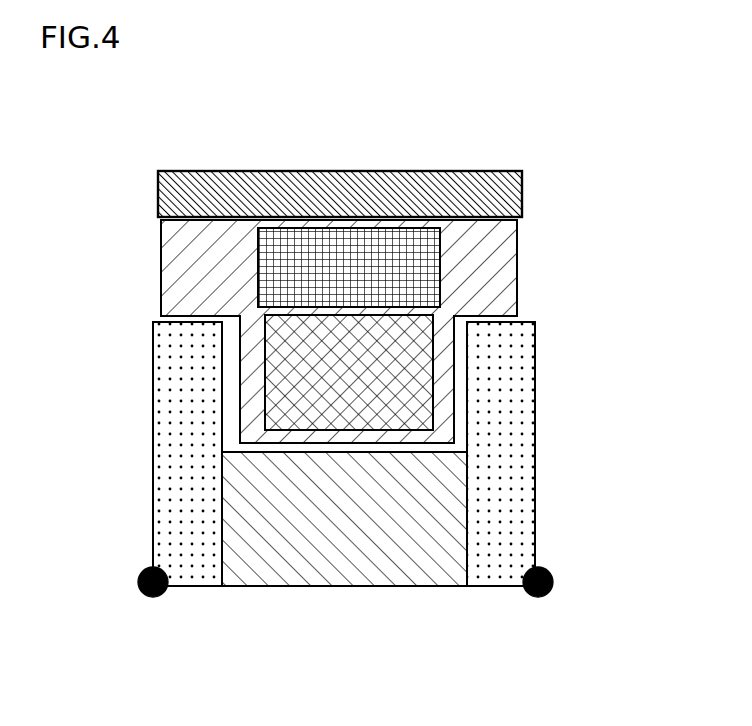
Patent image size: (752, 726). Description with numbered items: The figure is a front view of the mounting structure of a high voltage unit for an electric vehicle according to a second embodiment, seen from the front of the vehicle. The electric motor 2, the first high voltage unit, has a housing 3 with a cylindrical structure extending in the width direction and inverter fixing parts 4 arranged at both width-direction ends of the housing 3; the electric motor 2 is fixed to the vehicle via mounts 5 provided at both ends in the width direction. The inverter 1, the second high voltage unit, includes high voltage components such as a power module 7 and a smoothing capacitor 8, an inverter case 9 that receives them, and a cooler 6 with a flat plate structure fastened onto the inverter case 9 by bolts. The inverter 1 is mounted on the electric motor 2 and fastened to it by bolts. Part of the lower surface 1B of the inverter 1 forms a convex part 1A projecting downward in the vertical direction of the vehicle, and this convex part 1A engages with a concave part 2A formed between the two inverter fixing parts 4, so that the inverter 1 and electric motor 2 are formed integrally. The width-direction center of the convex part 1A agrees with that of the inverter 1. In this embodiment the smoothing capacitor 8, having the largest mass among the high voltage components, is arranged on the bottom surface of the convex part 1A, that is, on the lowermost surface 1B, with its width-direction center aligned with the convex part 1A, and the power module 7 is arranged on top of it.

The inverter 1 is at (113, 167).
The convex part 1A is at (440, 410).
The lower surface 1B is at (395, 443).
The electric motor 2 is at (115, 332).
The concave part 2A is at (334, 442).
The housing 3 is at (340, 562).
The inverter fixing parts 4 is at (513, 328).
The mounts 5 is at (145, 595).
The cooler 6 is at (483, 203).
The power module 7 is at (440, 264).
The smoothing capacitor 8 is at (403, 327).
The inverter case 9 is at (493, 288).